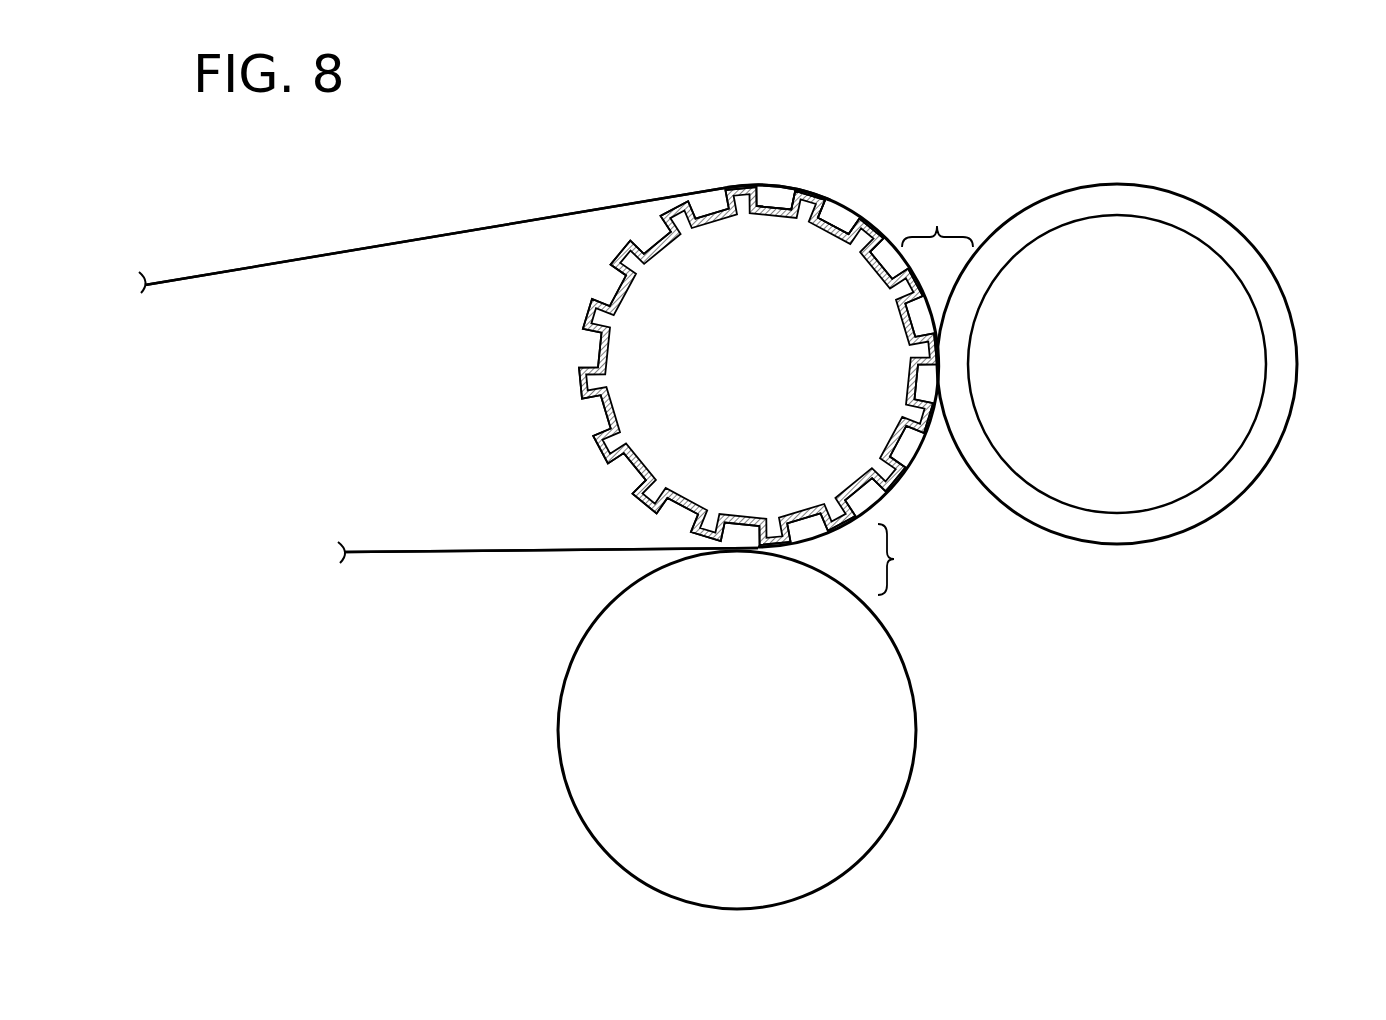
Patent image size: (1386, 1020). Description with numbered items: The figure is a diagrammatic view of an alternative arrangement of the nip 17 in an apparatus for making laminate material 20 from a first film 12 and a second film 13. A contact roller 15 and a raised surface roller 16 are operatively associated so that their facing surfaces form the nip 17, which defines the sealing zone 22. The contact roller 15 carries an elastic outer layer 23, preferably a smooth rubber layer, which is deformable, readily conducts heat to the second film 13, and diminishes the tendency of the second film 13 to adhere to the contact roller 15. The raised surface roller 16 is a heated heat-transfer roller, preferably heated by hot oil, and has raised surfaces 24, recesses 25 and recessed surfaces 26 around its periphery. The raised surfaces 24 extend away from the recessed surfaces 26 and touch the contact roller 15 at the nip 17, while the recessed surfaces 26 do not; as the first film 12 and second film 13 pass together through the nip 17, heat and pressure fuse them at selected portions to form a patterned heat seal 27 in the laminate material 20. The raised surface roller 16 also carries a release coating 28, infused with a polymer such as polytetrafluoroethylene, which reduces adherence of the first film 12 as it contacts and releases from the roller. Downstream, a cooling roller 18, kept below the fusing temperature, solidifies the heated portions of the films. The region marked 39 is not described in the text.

The first film 12 is at (341, 272).
The second film 13 is at (335, 236).
The contact roller 15 is at (1215, 278).
The raised surface roller 16 is at (603, 412).
The nip 17 is at (957, 355).
The cooling roller 18 is at (912, 693).
The laminate material 20 is at (415, 555).
The sealing zone 22 is at (937, 218).
The elastic outer layer 23 is at (1277, 340).
The raised surfaces 24 is at (815, 178).
The recesses 25 is at (775, 183).
The recessed surfaces 26 is at (838, 203).
The patterned heat seal 27 is at (513, 575).
The release coating 28 is at (600, 458).
The second nip region 39 is at (904, 559).